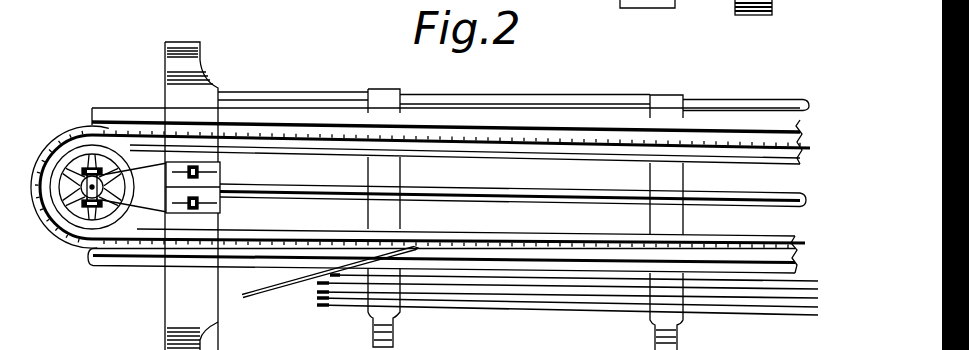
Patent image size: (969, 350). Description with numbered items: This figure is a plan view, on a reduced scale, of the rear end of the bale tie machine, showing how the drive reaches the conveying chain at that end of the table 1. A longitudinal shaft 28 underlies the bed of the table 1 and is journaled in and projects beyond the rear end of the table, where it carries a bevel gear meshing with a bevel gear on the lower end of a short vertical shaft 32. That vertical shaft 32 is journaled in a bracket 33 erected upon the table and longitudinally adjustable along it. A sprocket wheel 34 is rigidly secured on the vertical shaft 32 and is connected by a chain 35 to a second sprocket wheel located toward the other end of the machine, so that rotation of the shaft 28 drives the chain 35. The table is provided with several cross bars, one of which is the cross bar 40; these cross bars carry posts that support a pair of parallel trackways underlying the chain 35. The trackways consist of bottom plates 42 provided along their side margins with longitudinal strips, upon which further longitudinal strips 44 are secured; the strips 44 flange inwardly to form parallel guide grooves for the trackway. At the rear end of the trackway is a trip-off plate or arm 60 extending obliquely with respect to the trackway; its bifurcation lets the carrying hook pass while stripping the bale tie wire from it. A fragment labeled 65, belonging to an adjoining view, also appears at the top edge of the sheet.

The table 1 is at (247, 97).
The longitudinal shaft 28 is at (527, 190).
The short vertical shaft 32 is at (134, 187).
The bracket 33 is at (215, 180).
The sprocket wheel 34 is at (70, 143).
The chain 35 is at (528, 238).
The cross bar 40 is at (372, 315).
The bottom plates 42 is at (450, 132).
The longitudinal strips 44 is at (527, 155).
The trip-off plate or arm 60 is at (273, 287).
The element of adjacent figure 65 is at (730, 7).